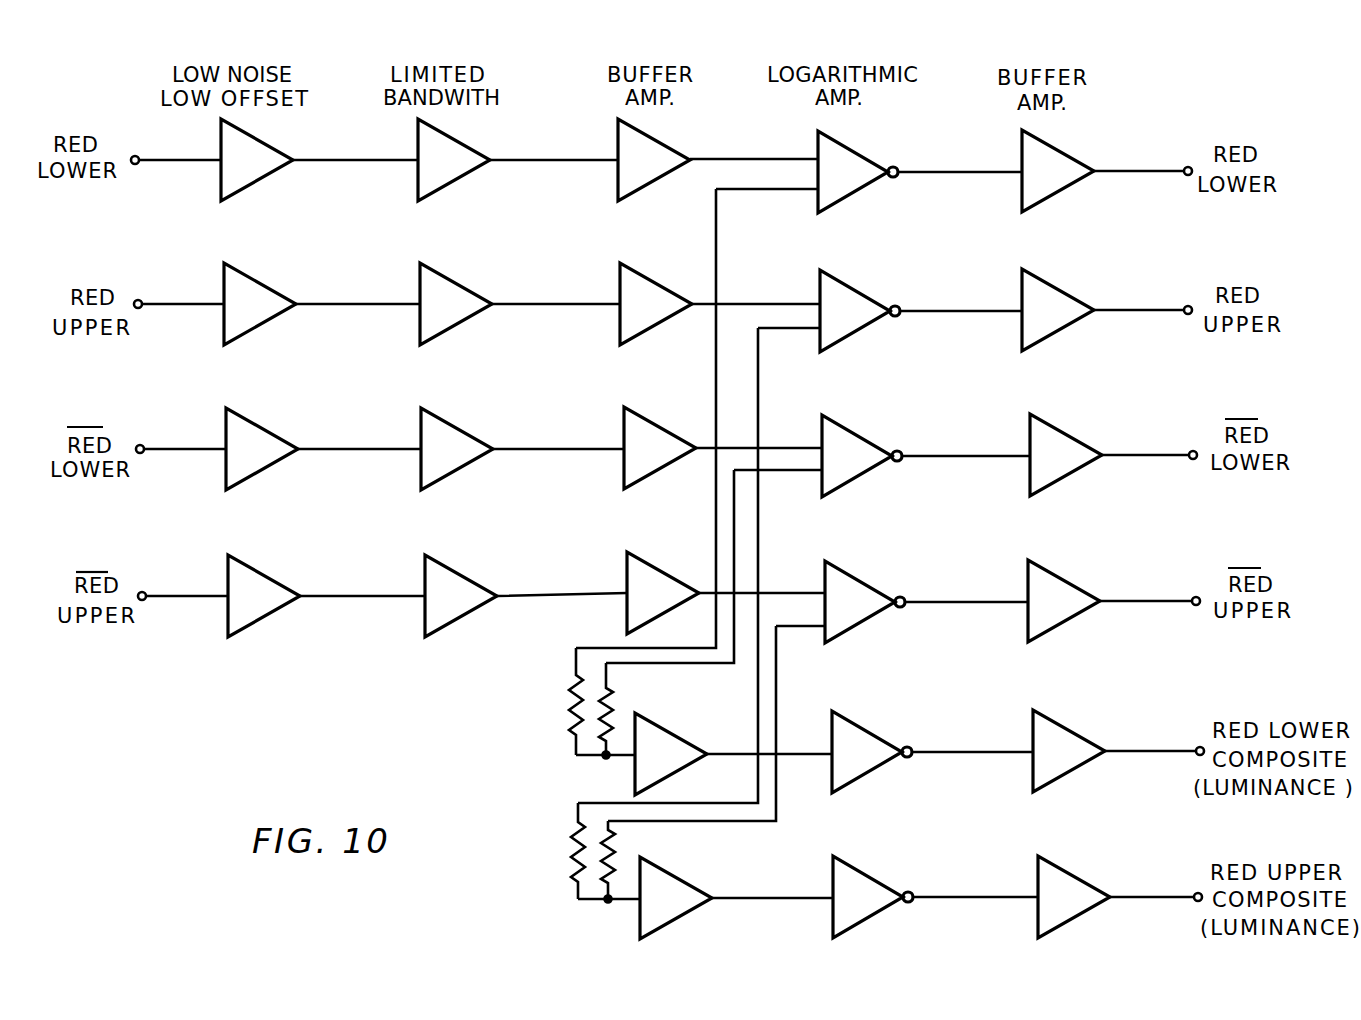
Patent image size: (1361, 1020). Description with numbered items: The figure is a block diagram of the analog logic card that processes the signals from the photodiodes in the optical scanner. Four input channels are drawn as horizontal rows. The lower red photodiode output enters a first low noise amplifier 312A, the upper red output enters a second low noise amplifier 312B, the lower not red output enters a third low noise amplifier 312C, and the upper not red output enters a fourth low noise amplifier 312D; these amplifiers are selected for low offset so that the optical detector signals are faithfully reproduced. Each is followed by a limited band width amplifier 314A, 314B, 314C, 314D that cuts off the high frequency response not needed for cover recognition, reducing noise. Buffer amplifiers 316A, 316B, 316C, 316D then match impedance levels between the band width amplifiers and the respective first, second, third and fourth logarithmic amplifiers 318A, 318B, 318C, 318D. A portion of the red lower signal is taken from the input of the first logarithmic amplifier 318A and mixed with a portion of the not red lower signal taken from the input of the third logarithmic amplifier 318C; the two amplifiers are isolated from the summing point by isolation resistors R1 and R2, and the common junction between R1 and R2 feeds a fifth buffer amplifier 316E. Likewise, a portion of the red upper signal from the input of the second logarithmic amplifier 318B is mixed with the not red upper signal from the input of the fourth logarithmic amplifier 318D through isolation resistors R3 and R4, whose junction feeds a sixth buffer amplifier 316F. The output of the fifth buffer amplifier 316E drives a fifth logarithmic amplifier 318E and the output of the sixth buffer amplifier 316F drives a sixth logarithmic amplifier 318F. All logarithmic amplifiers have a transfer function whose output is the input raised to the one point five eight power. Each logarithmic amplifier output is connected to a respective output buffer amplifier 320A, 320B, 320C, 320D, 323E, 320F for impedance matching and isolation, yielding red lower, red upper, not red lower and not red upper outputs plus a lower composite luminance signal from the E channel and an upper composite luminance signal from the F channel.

The first low noise amplifier 312A is at (257, 188).
The second low noise amplifier 312B is at (260, 332).
The third low noise amplifier 312C is at (260, 478).
The fourth low noise amplifier 312D is at (252, 624).
The limited band width amplifier 314A is at (452, 188).
The limited band width amplifier 314B is at (456, 332).
The limited band width amplifier 314C is at (456, 478).
The limited band width amplifier 314D is at (462, 620).
The buffer amplifier 316A is at (636, 190).
The buffer amplifier 316B is at (660, 330).
The buffer amplifier 316C is at (658, 474).
The buffer amplifier 316D is at (652, 620).
The fifth buffer amplifier 316E is at (668, 776).
The sixth buffer amplifier 316F is at (672, 924).
The first logarithmic amplifier 318A is at (845, 198).
The second logarithmic amplifier 318B is at (846, 338).
The third logarithmic amplifier 318C is at (848, 484).
The fourth logarithmic amplifier 318D is at (850, 630).
The fifth logarithmic amplifier 318E is at (870, 768).
The sixth logarithmic amplifier 318F is at (862, 922).
The buffer amplifier 320A is at (1050, 198).
The buffer amplifier 320B is at (1048, 338).
The buffer amplifier 320C is at (1056, 482).
The buffer amplifier 320D is at (1058, 628).
The buffer amplifier 323E is at (1062, 778).
The buffer amplifier 320F is at (1068, 922).
The isolation resistor R1 is at (566, 700).
The isolation resistor R2 is at (614, 700).
The isolation resistor R3 is at (569, 858).
The isolation resistor R4 is at (616, 845).